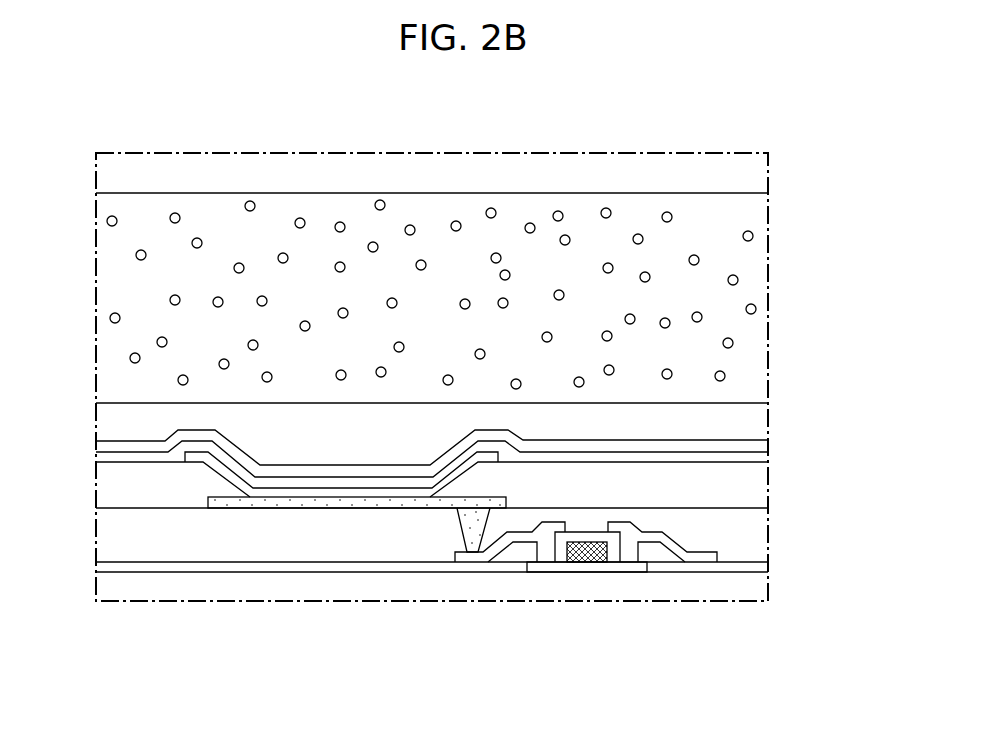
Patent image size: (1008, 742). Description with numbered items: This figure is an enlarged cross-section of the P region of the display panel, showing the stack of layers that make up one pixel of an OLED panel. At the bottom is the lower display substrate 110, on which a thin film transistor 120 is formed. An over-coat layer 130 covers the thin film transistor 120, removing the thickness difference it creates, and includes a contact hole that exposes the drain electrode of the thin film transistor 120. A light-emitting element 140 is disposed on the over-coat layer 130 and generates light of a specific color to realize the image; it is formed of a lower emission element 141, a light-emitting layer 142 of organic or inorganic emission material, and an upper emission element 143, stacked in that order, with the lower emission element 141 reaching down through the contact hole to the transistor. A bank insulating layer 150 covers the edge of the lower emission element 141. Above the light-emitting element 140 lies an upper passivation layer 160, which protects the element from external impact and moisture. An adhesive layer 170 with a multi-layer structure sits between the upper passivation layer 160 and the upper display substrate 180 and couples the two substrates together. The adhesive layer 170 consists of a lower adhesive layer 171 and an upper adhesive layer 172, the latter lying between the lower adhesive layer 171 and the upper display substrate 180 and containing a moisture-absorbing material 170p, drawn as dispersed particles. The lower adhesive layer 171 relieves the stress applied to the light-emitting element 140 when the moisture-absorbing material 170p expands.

The P region P is at (132, 152).
The lower display substrate 110 is at (768, 584).
The thin film transistor 120 is at (575, 575).
The over-coat layer 130 is at (768, 533).
The light-emitting element 140 is at (432, 582).
The lower emission element 141 is at (338, 502).
The light-emitting layer 142 is at (302, 490).
The upper emission element 143 is at (232, 463).
The bank insulating layer 150 is at (768, 483).
The upper passivation layer 160 is at (108, 443).
The adhesive layer 170 is at (850, 321).
The moisture-absorbing material 170p is at (152, 338).
The lower adhesive layer 171 is at (768, 424).
The upper adhesive layer 172 is at (768, 330).
The upper display substrate 180 is at (768, 172).